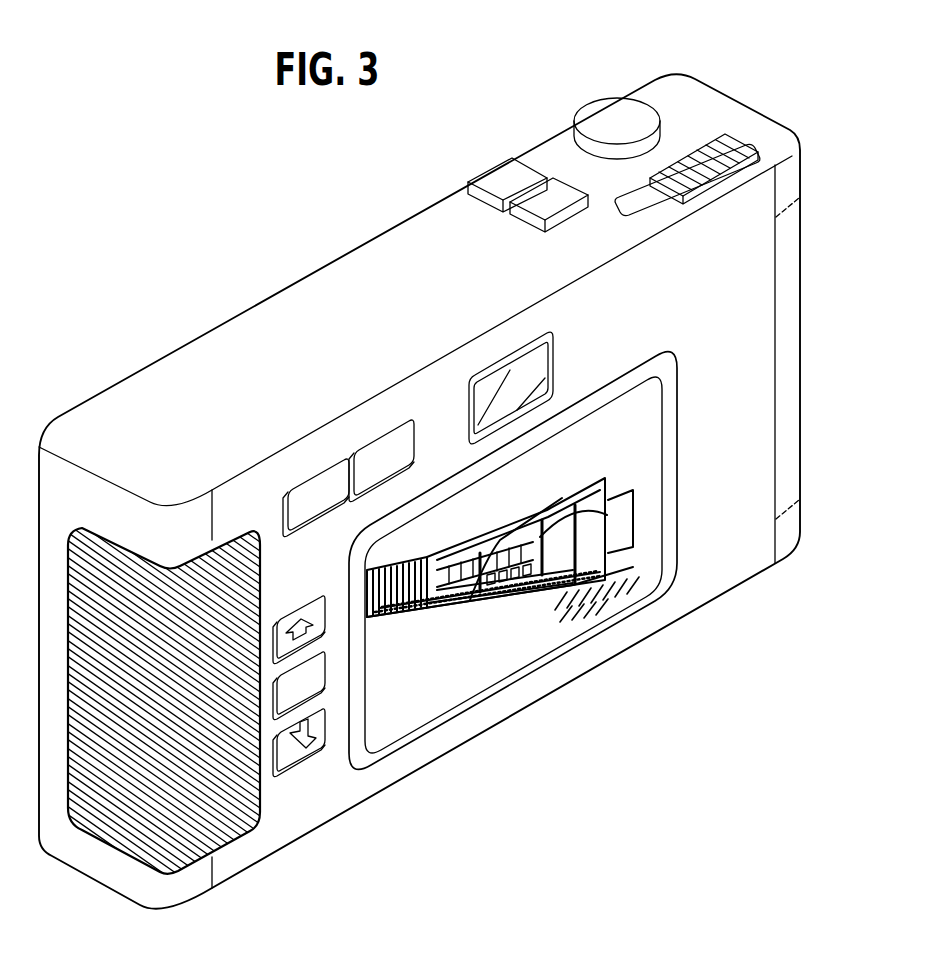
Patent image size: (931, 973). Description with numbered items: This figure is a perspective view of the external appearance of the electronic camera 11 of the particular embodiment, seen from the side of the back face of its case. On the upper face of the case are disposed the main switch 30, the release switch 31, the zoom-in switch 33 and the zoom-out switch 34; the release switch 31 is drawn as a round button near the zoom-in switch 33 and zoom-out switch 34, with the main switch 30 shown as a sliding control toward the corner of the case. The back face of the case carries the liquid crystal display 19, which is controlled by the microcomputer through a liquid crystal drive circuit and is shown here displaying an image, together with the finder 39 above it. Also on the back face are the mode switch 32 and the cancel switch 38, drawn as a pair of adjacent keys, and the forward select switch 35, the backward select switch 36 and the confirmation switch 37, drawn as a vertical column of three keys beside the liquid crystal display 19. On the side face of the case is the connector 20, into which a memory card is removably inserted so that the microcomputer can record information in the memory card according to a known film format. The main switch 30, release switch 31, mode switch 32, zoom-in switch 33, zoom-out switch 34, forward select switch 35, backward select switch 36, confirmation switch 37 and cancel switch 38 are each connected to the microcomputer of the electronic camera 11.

The electronic camera 11 is at (176, 886).
The liquid crystal display 19 is at (567, 628).
The connector 20 is at (790, 303).
The main switch 30 is at (730, 150).
The release switch 31 is at (602, 113).
The mode switch 32 is at (382, 433).
The zoom-in switch 33 is at (480, 177).
The zoom-out switch 34 is at (556, 178).
The forward select switch 35 is at (323, 747).
The backward select switch 36 is at (322, 633).
The confirmation switch 37 is at (323, 680).
The cancel switch 38 is at (317, 473).
The finder 39 is at (553, 367).